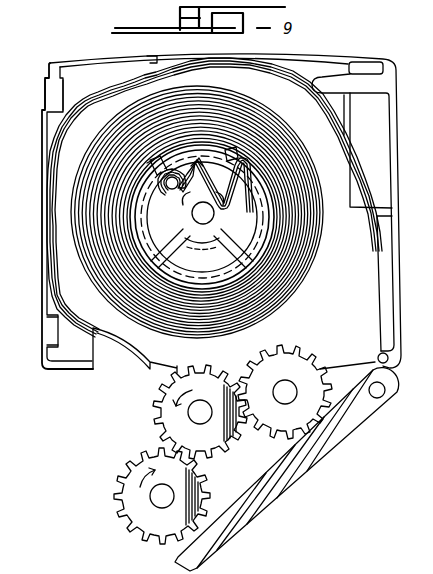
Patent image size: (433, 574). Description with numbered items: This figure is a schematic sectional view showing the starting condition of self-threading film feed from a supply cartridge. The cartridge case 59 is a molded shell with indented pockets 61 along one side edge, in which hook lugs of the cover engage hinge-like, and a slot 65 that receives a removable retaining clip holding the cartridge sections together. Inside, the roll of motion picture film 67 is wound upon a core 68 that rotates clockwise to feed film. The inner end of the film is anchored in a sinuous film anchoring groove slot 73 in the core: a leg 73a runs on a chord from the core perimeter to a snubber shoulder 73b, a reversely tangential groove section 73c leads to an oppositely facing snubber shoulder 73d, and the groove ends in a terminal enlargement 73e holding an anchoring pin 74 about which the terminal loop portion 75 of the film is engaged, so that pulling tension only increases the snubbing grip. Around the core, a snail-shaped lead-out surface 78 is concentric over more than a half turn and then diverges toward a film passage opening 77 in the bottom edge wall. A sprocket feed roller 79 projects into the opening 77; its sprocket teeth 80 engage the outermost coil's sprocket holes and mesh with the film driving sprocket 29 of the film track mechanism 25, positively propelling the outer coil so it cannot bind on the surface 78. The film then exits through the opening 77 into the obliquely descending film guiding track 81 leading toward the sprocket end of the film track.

The film track mechanism 25 is at (99, 527).
The film driving sprocket 29 is at (128, 496).
The case 59 is at (85, 77).
The indented pockets 61 is at (47, 88).
The slot 65 is at (330, 76).
The roll of motion picture film 67 is at (318, 238).
The core 68 is at (258, 245).
The film anchoring groove slot 73 is at (214, 227).
The leg 73a is at (252, 196).
The snubber shoulder 73b is at (230, 165).
The groove section 73c is at (192, 222).
The snubber shoulder 73d is at (196, 160).
The terminal enlargement 73e is at (163, 256).
The anchoring pin 74 is at (165, 185).
The terminal loop portion 75 is at (152, 160).
The film passage opening 77 is at (389, 359).
The lead-out surface 78 is at (142, 99).
The sprocket feed roller 79 is at (177, 420).
The sprocket teeth 80 is at (163, 387).
The film guiding track 81 is at (313, 471).